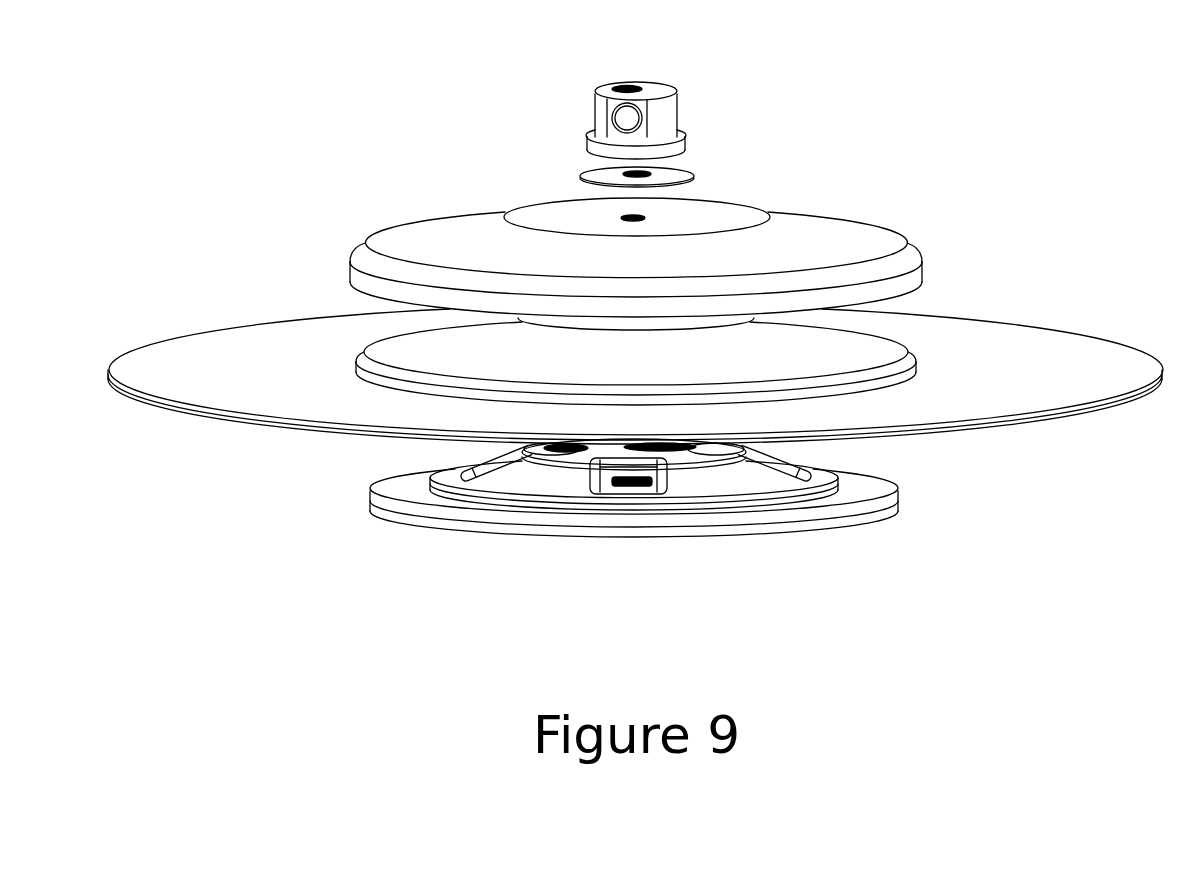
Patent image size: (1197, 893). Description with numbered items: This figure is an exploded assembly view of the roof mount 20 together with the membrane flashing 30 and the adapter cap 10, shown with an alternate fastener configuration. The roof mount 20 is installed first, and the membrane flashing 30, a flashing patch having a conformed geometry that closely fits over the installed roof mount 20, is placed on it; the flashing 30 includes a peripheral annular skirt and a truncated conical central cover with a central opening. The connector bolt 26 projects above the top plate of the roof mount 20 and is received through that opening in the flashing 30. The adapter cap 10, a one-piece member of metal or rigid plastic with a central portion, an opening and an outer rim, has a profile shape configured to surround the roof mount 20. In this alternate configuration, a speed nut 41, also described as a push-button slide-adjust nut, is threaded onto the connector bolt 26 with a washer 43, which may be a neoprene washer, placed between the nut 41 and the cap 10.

The adapter cap 10 is at (840, 243).
The roof mount 20 is at (926, 462).
The connector bolt 26 is at (633, 427).
The membrane flashing 30 is at (995, 362).
The speed nut 41 is at (598, 118).
The washer 43 is at (580, 176).